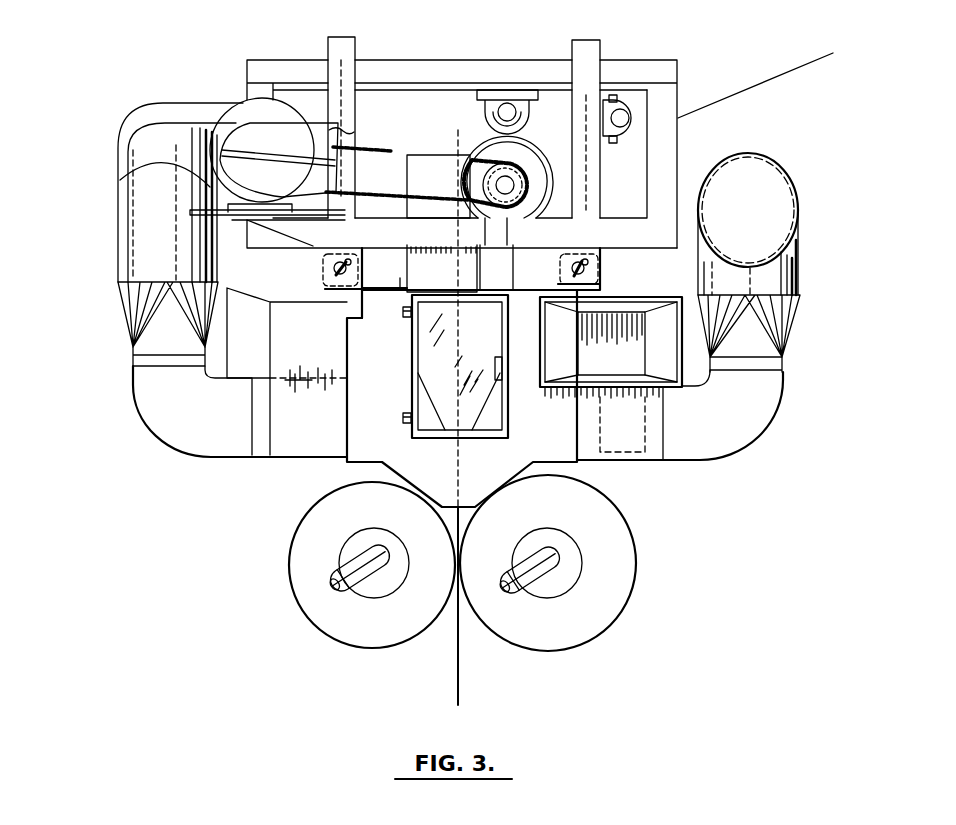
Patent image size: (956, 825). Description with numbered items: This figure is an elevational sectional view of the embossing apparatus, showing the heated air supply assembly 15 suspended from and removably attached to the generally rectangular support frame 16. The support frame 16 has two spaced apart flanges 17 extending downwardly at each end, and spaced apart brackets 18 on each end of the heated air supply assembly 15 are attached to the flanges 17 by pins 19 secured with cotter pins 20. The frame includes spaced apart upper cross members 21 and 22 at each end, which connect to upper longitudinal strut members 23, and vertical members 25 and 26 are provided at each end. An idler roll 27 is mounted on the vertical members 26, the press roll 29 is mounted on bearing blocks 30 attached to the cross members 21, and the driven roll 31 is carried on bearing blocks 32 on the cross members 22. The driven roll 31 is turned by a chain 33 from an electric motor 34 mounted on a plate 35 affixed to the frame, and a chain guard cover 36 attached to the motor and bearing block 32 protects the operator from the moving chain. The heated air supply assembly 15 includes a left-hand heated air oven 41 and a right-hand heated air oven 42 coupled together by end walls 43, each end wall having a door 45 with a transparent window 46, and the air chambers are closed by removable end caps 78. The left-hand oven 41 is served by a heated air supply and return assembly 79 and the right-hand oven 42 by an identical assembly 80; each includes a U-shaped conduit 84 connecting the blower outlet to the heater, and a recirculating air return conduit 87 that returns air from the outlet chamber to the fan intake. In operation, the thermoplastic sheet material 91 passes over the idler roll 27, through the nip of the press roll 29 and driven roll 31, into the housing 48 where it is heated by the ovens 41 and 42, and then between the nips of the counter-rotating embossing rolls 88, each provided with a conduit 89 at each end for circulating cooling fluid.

The heated air supply assembly 15 is at (465, 397).
The support frame 16 is at (494, 124).
The flanges 17 is at (325, 257).
The brackets 18 is at (365, 290).
The pins 19 is at (334, 270).
The cotter pins 20 is at (611, 96).
The upper cross member 21 is at (636, 72).
The cross member 22 is at (638, 230).
The upper longitudinal strut members 23 is at (347, 45).
The vertical member 25 is at (351, 110).
The vertical member 26 is at (601, 168).
The idler roll 27 is at (630, 117).
The press roll 29 is at (495, 128).
The bearing blocks 30 is at (505, 95).
The driven roll 31 is at (528, 150).
The bearing blocks 32 is at (535, 190).
The chain 33 is at (368, 150).
The electric motor 34 is at (243, 105).
The plate 35 is at (195, 212).
The chain guard cover 36 is at (268, 149).
The left-hand heated air oven 41 is at (262, 470).
The right-hand heated air oven 42 is at (645, 484).
The end walls 43 is at (533, 431).
The door 45 is at (412, 378).
The transparent window 46 is at (433, 330).
The housing 48 is at (433, 128).
The end caps 78 is at (293, 339).
The heated air supply and return assembly 79 is at (442, 301).
The heated air supply and return assembly 80 is at (731, 387).
The U-shaped conduit 84 is at (678, 388).
The recirculating air return conduit 87 is at (130, 268).
The embossing rolls 88 is at (497, 563).
The conduit 89 is at (341, 580).
The thermoplastic sheet material 91 is at (773, 80).